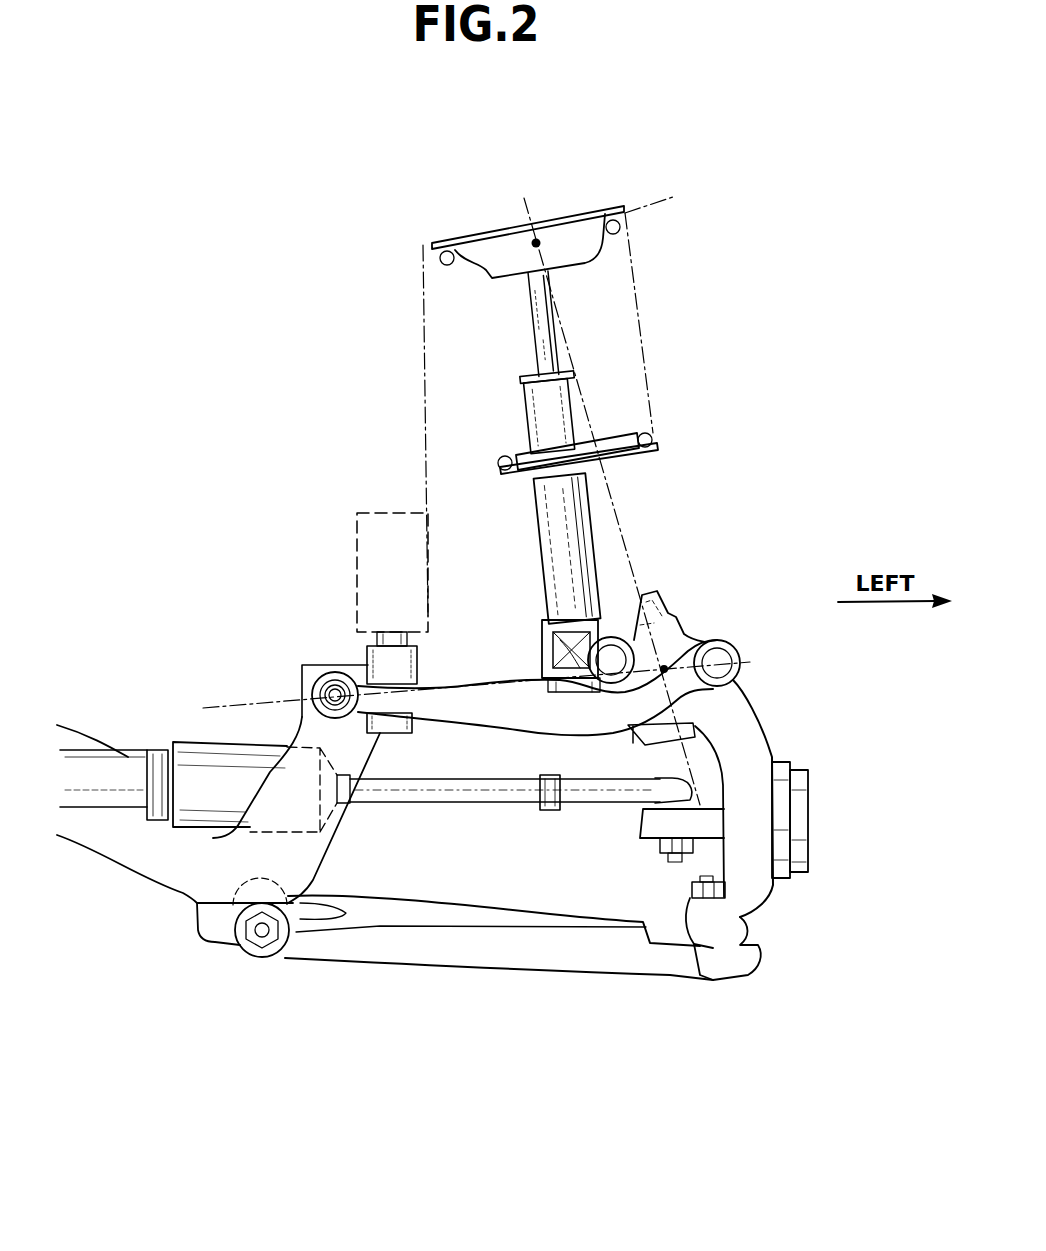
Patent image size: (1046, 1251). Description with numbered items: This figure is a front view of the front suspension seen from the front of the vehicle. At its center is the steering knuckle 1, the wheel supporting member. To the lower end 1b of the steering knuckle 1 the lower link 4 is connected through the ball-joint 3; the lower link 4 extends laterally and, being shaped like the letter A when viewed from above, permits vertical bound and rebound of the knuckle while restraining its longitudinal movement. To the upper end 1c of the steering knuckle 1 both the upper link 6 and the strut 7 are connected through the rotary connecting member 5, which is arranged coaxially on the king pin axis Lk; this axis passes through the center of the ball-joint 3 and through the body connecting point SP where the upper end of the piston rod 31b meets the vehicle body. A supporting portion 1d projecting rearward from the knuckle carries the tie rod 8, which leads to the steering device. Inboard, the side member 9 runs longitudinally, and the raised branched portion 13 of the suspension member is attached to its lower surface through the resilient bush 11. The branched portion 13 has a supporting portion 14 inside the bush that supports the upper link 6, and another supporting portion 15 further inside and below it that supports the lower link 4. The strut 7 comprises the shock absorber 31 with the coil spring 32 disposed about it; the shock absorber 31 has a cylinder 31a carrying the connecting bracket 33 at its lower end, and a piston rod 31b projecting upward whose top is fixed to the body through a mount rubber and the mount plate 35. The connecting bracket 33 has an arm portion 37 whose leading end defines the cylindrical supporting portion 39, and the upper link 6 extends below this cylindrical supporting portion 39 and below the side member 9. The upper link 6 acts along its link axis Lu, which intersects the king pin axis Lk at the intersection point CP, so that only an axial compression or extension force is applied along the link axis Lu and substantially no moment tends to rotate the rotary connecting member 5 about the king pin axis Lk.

The steering knuckle 1 is at (729, 725).
The lower end of the steering knuckle 1b is at (742, 890).
The upper end of the steering knuckle 1c is at (735, 724).
The supporting portion 1d is at (656, 827).
The ball-joint 3 is at (748, 967).
The lower link 4 is at (502, 973).
The rotary connecting member 5 is at (672, 580).
The upper link 6 is at (433, 687).
The strut 7 is at (571, 438).
The tie rod 8 is at (483, 793).
The side member 9 is at (374, 512).
The resilient bush 11 is at (399, 725).
The branched portion 13 is at (112, 849).
The supporting portion 14 is at (320, 670).
The supporting portion 15 is at (210, 924).
The shock absorber 31 is at (569, 450).
The cylinder 31a is at (540, 514).
The piston rod 31b is at (534, 321).
The coil spring 32 is at (657, 440).
The connecting bracket 33 is at (531, 634).
The mount plate 35 is at (455, 250).
The arm portion 37 is at (578, 636).
The cylindrical supporting portion 39 is at (618, 636).
The body connecting point SP is at (538, 241).
The king pin axis Lk is at (597, 422).
The link axis Lu is at (235, 704).
The intersection point CP is at (668, 666).